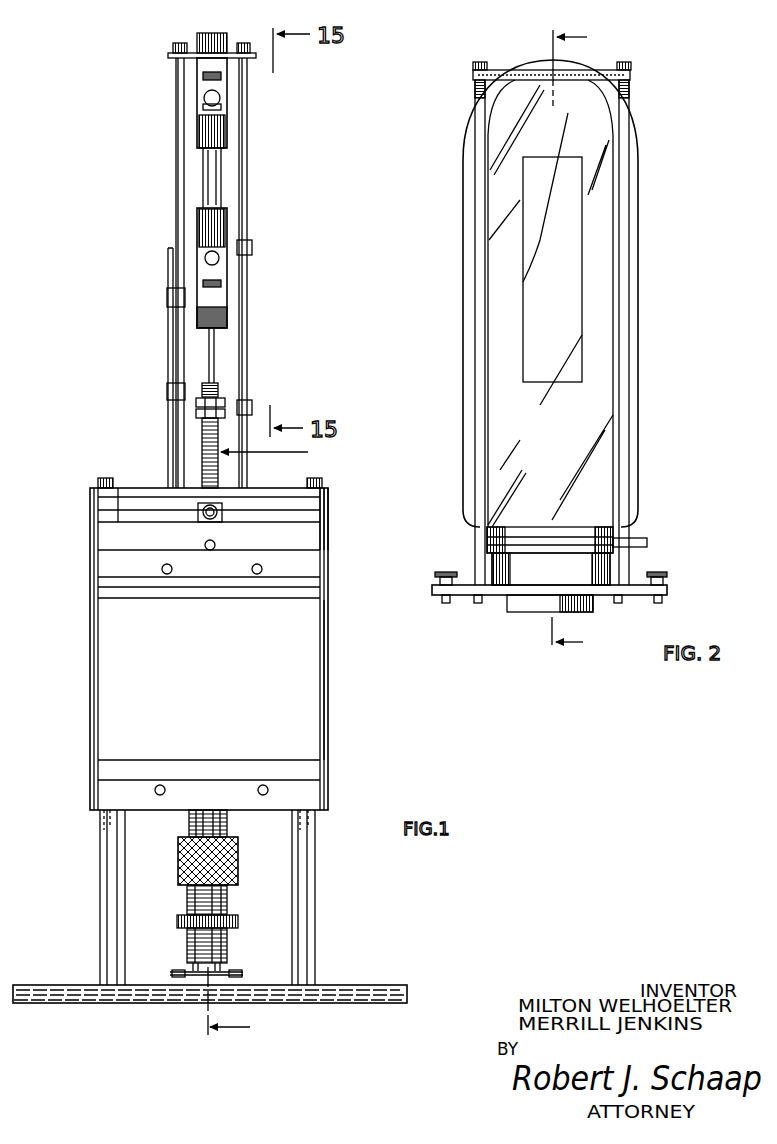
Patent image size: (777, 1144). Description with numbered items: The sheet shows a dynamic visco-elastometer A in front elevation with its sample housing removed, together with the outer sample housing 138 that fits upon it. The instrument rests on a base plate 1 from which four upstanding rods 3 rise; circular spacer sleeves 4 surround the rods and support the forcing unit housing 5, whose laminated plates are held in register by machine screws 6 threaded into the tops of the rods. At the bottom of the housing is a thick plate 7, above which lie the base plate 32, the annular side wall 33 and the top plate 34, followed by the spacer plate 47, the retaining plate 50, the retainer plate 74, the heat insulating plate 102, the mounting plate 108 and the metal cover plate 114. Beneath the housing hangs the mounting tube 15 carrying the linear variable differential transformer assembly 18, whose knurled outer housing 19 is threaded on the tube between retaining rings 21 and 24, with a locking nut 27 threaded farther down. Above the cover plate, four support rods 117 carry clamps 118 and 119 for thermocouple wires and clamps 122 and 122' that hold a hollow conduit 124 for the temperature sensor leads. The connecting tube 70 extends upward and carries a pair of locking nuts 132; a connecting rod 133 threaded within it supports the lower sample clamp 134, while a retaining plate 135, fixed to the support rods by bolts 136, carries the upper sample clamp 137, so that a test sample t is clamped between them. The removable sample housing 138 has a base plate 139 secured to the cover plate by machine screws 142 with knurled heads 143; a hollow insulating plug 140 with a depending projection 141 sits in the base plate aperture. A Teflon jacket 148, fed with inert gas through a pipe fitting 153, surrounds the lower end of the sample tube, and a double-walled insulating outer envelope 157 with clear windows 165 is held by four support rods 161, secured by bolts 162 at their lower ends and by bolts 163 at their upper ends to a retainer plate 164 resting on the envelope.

In FIG. 1, the base plate 1 is at (378, 990).
In FIG. 1, the upstanding rods 3 is at (265, 742).
In FIG. 1, the spacer sleeves 4 is at (101, 835).
In FIG. 1, the forcing unit housing 5 is at (331, 726).
In FIG. 1, the machine screws 6 is at (104, 478).
In FIG. 1, the thick plate 7 is at (322, 800).
In FIG. 1, the mounting tube 15 is at (190, 943).
In FIG. 1, the knurled outer housing 19 is at (238, 865).
In FIG. 1, the retaining ring 21 is at (228, 838).
In FIG. 1, the retaining ring 24 is at (228, 889).
In FIG. 1, the locking nut 27 is at (238, 919).
In FIG. 1, the base plate 32 is at (322, 770).
In FIG. 1, the annular side wall 33 is at (328, 665).
In FIG. 1, the top plate 34 is at (328, 596).
In FIG. 1, the spacer plate 47 is at (328, 580).
In FIG. 1, the retaining plate 50 is at (328, 560).
In FIG. 1, the connecting tube 70 is at (207, 385).
In FIG. 1, the retainer plate 74 is at (330, 530).
In FIG. 1, the heat insulating plate 102 is at (93, 518).
In FIG. 1, the mounting plate 108 is at (94, 514).
In FIG. 1, the cover plate 114 is at (95, 493).
In FIG. 1, the support rods 117 is at (172, 344).
In FIG. 1, the clamp 118 is at (253, 247).
In FIG. 1, the clamp 119 is at (253, 405).
In FIG. 1, the clamp 122 is at (150, 293).
In FIG. 1, the clamp 122' is at (149, 386).
In FIG. 1, the hollow conduit 124 is at (170, 423).
In FIG. 1, the locking nuts 132 is at (222, 397).
In FIG. 1, the connecting rod 133 is at (215, 348).
In FIG. 1, the lower sample clamp 134 is at (218, 227).
In FIG. 1, the retaining plate 135 is at (168, 56).
In FIG. 1, the bolts 136 is at (179, 43).
In FIG. 1, the upper sample clamp 137 is at (220, 130).
In FIG. 1, the test sample t is at (207, 178).
In FIG. 1, the dynamic visco-elastometer A is at (314, 406).
In FIG. 2, the outer sample housing 138 is at (641, 228).
In FIG. 2, the base plate 139 is at (667, 592).
In FIG. 2, the insulating plug 140 is at (538, 572).
In FIG. 2, the depending projection 141 is at (590, 611).
In FIG. 2, the machine screws 142 is at (445, 603).
In FIG. 2, the knurled heads 143 is at (444, 572).
In FIG. 2, the Teflon jacket 148 is at (488, 538).
In FIG. 2, the pipe fitting 153 is at (647, 542).
In FIG. 2, the insulating outer envelope 157 is at (596, 403).
In FIG. 2, the support rods 161 is at (621, 353).
In FIG. 2, the bolts 162 is at (478, 603).
In FIG. 2, the bolts 163 is at (632, 68).
In FIG. 2, the retainer plate 164 is at (632, 77).
In FIG. 2, the clear windows 165 is at (576, 278).
In FIG. 2, the linear variable differential transformer assembly 18 is at (582, 342).